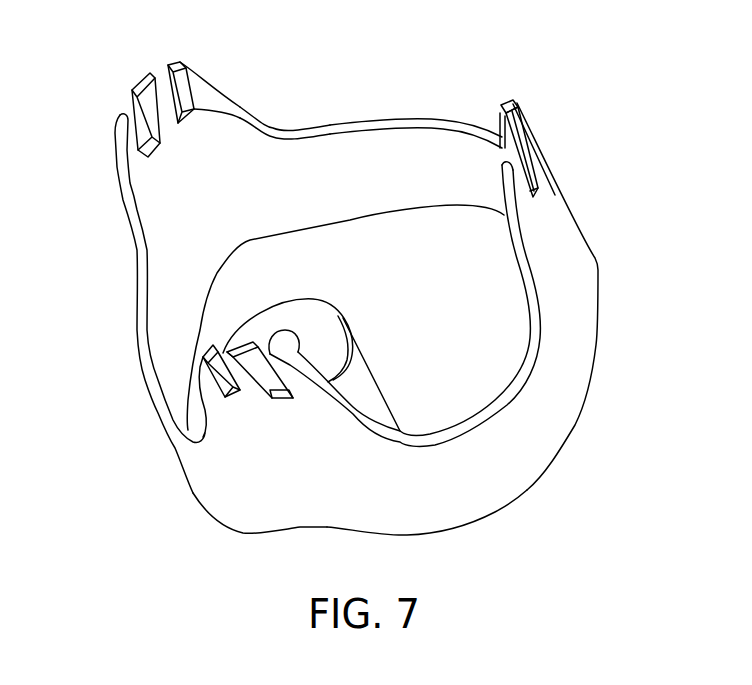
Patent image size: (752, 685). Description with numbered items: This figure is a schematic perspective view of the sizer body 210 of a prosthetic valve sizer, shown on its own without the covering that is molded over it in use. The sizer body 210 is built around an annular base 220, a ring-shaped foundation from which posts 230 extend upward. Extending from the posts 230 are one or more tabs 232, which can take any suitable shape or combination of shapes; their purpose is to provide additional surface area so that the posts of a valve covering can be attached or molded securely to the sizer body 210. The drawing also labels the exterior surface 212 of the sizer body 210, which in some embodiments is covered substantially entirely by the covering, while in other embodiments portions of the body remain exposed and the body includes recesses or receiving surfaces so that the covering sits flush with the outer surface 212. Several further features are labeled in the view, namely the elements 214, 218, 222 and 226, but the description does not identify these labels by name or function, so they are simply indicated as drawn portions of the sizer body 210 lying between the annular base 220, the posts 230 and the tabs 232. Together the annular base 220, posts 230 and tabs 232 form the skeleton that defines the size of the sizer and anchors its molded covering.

The sizer body 210 is at (615, 301).
The exterior surface 212 is at (585, 238).
The neck portion of band 214 is at (287, 132).
The bottom left body edge 218 is at (193, 493).
The annular base 220 is at (527, 490).
The band 222 is at (370, 127).
The cylindrical boss 226 is at (313, 307).
The posts 230 is at (127, 197).
The tabs 232 is at (135, 87).